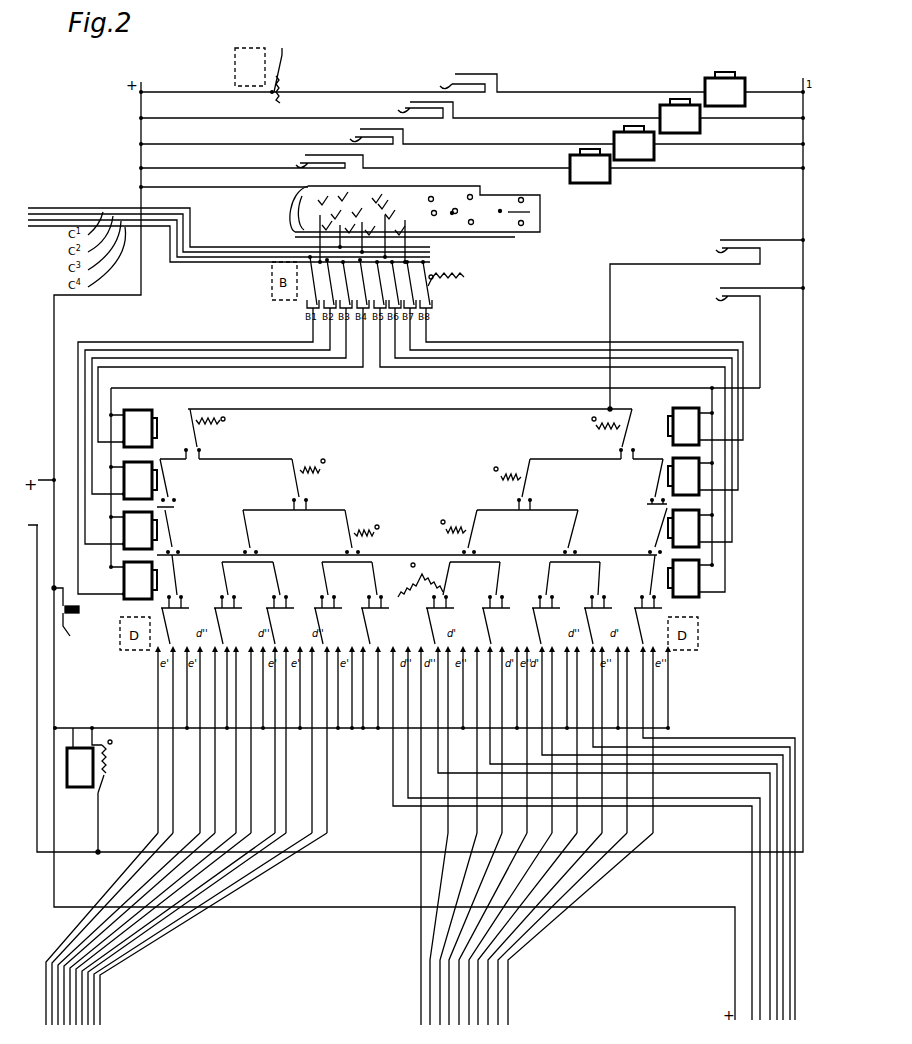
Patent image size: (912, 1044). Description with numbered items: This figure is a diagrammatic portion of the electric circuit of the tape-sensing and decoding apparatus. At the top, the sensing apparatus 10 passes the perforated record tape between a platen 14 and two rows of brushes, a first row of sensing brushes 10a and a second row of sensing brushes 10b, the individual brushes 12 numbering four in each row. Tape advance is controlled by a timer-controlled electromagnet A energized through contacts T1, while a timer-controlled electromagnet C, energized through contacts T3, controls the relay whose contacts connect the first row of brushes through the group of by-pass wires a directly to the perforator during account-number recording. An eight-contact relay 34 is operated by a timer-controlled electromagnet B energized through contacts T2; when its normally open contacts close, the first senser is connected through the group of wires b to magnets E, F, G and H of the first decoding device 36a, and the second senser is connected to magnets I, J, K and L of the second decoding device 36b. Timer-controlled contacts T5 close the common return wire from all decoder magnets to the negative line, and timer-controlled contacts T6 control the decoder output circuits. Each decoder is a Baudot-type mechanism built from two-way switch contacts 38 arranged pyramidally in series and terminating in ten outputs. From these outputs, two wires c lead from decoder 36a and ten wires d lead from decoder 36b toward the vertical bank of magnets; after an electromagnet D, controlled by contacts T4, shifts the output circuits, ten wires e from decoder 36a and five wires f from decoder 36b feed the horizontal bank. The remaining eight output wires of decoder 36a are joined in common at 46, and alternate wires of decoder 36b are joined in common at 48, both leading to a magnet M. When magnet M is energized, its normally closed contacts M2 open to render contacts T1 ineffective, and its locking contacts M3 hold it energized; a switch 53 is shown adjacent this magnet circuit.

The sensing apparatus 10 is at (416, 236).
The first row of sensing brushes 10a is at (346, 196).
The second row of sensing brushes 10b is at (386, 210).
The brushes 12 is at (362, 239).
The sensing platen 14 is at (490, 202).
The eight-contact relay 34 is at (454, 302).
The first decoding device 36a is at (226, 434).
The second decoding device 36b is at (596, 434).
The two-way switch contacts 38 is at (312, 478).
The common connection 46 is at (236, 729).
The common connection 48 is at (502, 729).
The switch 53 is at (73, 615).
The normally closed contacts M2 is at (286, 62).
The locking contacts M3 is at (108, 766).
The magnet M is at (80, 757).
The contacts T1 is at (440, 82).
The contacts T2 is at (400, 108).
The contacts T3 is at (356, 136).
The contacts T4 is at (308, 162).
The timer-controlled contacts T5 is at (708, 295).
The timer-controlled contacts T6 is at (708, 247).
The timer-controlled electromagnet A is at (725, 89).
The timer-controlled electromagnet B is at (680, 116).
The timer-controlled electromagnet C is at (634, 143).
The electromagnet D is at (590, 166).
The magnet E is at (140, 580).
The magnet F is at (140, 530).
The magnet G is at (140, 480).
The magnet H is at (140, 428).
The magnet I is at (683, 578).
The magnet J is at (683, 528).
The magnet K is at (683, 476).
The magnet L is at (683, 426).
The group of wires a is at (60, 212).
The group of wires b is at (207, 356).
The wires c is at (421, 736).
The wires d is at (485, 1000).
The wires e is at (95, 998).
The wires f is at (775, 1000).